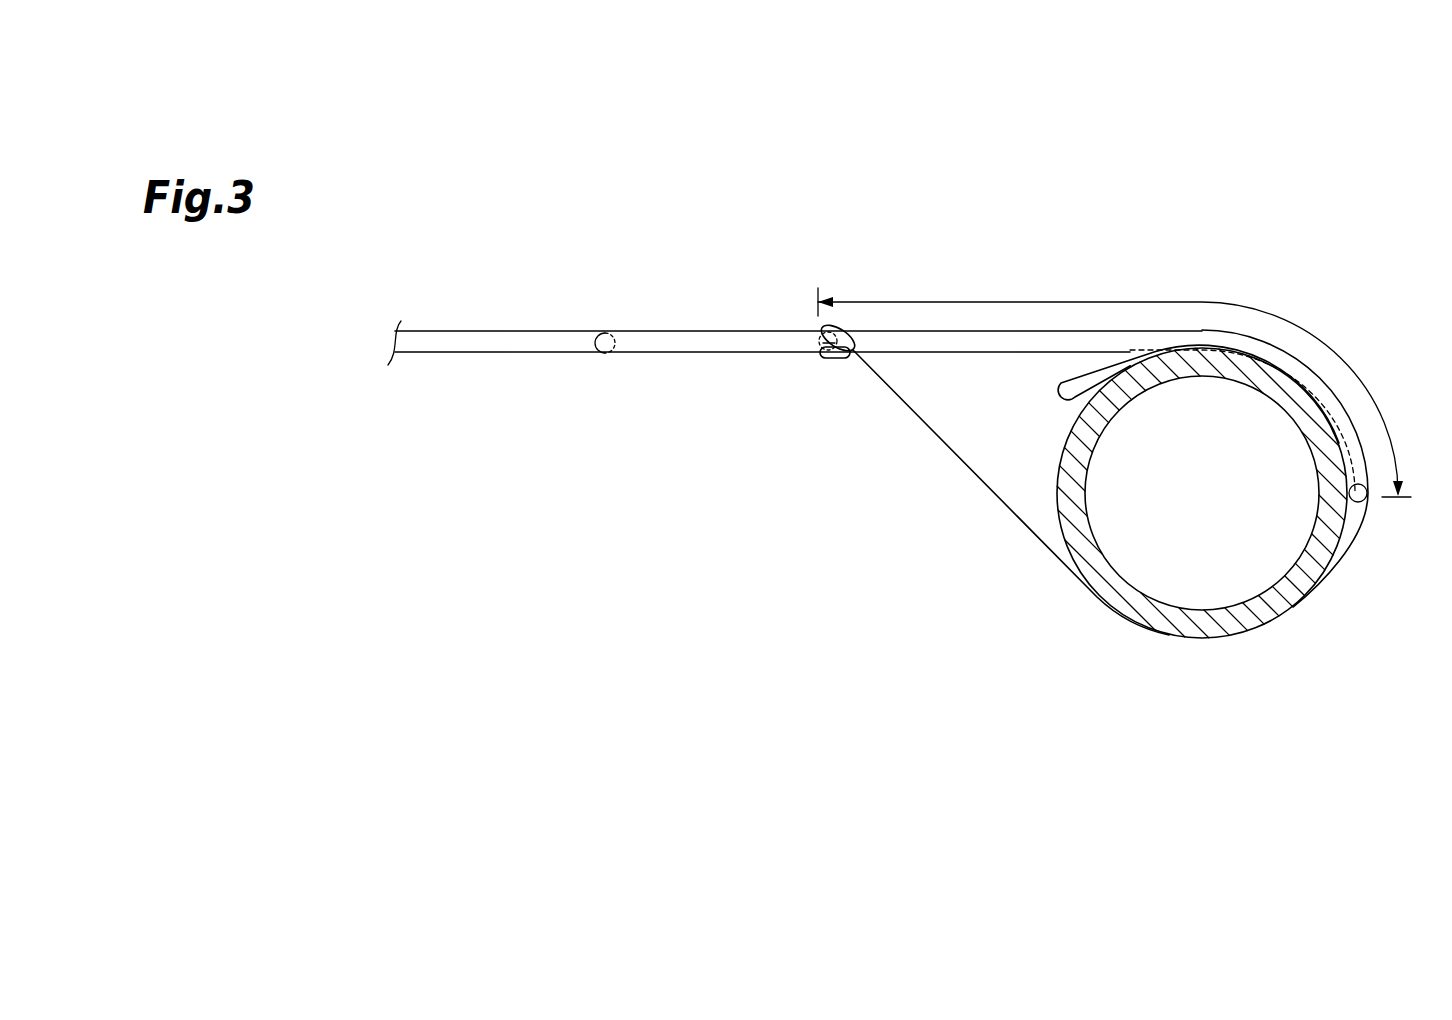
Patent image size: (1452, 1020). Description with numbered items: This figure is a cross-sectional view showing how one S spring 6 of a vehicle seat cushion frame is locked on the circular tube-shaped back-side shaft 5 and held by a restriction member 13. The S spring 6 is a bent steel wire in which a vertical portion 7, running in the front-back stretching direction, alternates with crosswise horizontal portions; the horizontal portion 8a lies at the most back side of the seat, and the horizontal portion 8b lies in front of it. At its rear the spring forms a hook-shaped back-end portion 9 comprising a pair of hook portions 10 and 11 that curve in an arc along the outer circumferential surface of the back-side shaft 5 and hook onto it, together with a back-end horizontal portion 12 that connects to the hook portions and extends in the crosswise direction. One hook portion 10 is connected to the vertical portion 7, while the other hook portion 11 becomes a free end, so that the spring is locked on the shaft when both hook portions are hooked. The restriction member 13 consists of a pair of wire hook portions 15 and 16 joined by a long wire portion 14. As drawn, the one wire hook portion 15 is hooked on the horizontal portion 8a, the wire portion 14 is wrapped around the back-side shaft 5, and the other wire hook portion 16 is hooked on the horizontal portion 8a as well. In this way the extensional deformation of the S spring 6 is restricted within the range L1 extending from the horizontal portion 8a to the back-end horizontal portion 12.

The back-side shaft 5 is at (1065, 447).
The S spring 6 is at (525, 362).
The vertical portion 7 is at (463, 345).
The horizontal portion 8a is at (819, 340).
The horizontal portion 8b is at (606, 333).
The back-end portion 9 is at (1299, 341).
The hook portion 10 is at (1126, 345).
The hook portion 11 is at (1240, 340).
The back-end horizontal portion 12 is at (1366, 501).
The restriction member 13 is at (958, 469).
The wire portion 14 is at (1020, 517).
The wire hook portion 15 is at (838, 359).
The wire hook portion 16 is at (839, 328).
The range L1 is at (1022, 300).